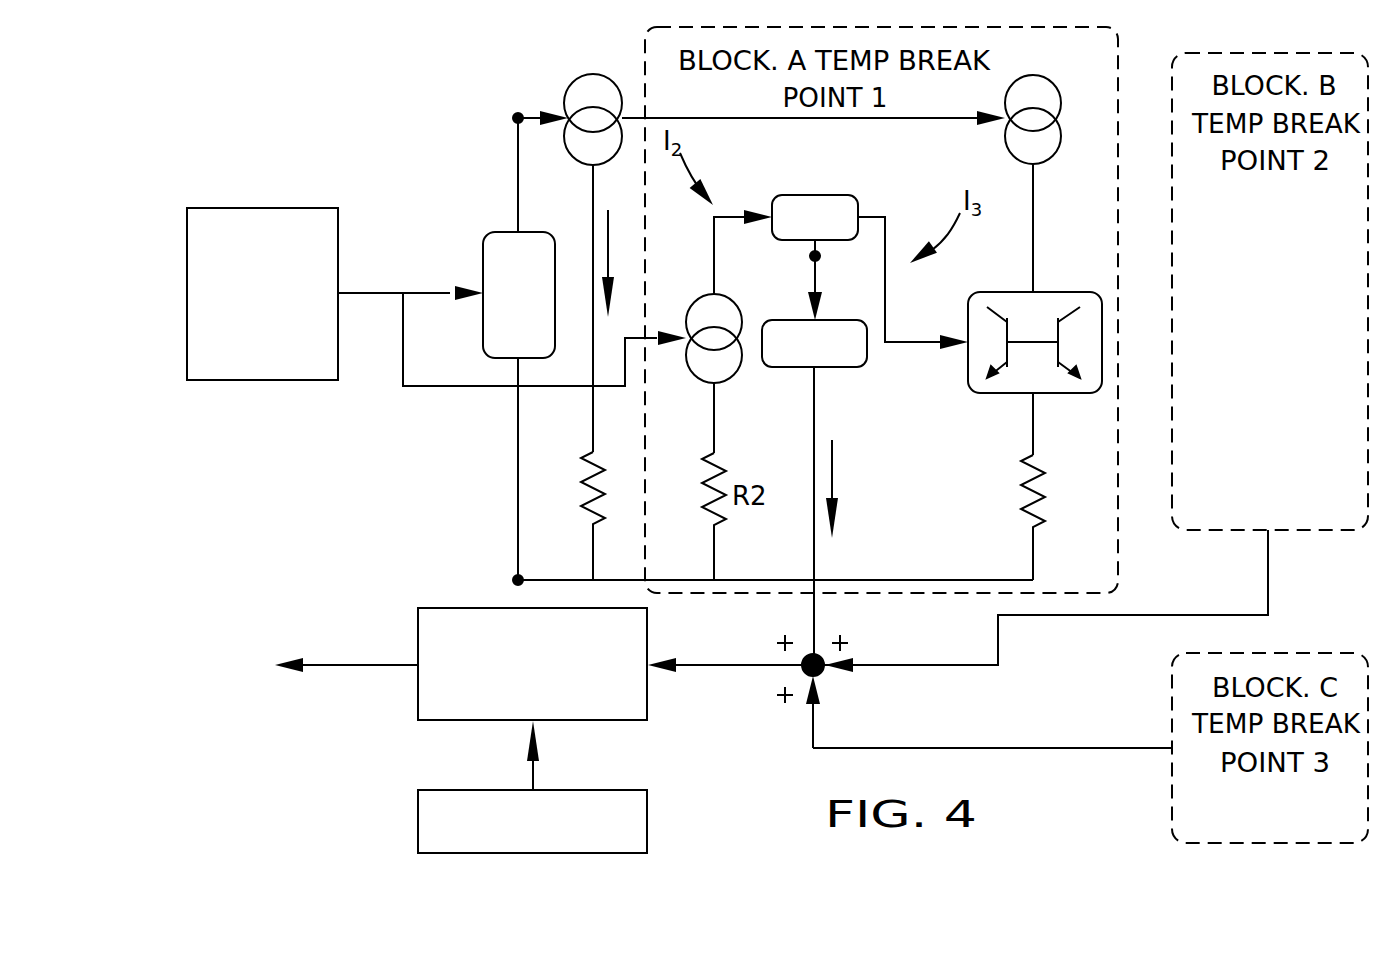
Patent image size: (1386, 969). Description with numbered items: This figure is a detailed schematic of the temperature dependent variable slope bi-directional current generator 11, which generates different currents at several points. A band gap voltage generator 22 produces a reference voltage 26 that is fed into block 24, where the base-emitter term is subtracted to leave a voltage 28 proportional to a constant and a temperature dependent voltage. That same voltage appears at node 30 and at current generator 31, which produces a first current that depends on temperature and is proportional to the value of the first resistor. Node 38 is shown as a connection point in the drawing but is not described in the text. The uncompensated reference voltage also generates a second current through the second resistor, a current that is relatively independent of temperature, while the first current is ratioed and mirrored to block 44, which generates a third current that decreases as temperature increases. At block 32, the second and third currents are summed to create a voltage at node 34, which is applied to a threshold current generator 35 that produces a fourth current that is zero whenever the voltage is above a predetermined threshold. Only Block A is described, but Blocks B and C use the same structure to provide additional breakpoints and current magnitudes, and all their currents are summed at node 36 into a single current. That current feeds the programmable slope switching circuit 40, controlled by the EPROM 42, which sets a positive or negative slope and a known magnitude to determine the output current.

The temperature dependent variable slope bi-directional current generator 11 is at (318, 80).
The band gap voltage generator 22 is at (262, 208).
The block 24 is at (490, 232).
The reference voltage 26 is at (380, 292).
The voltage 28 is at (518, 177).
The node 30 is at (490, 106).
The current generator 31 is at (580, 73).
The block 32 is at (803, 195).
The node 34 is at (782, 276).
The threshold current generator 35 is at (850, 367).
The node 36 is at (755, 653).
The node 38 is at (492, 562).
The programmable slope switching circuit 40 is at (647, 697).
The EPROM 42 is at (647, 822).
The block 44 is at (1057, 292).